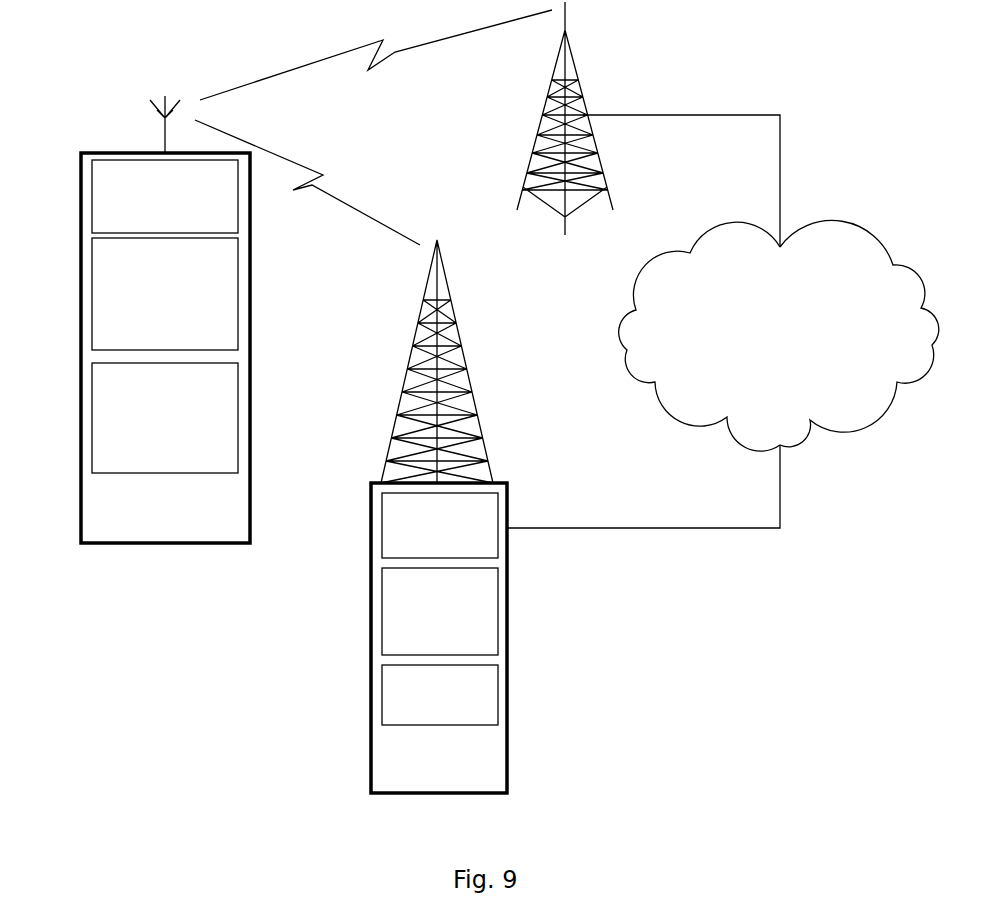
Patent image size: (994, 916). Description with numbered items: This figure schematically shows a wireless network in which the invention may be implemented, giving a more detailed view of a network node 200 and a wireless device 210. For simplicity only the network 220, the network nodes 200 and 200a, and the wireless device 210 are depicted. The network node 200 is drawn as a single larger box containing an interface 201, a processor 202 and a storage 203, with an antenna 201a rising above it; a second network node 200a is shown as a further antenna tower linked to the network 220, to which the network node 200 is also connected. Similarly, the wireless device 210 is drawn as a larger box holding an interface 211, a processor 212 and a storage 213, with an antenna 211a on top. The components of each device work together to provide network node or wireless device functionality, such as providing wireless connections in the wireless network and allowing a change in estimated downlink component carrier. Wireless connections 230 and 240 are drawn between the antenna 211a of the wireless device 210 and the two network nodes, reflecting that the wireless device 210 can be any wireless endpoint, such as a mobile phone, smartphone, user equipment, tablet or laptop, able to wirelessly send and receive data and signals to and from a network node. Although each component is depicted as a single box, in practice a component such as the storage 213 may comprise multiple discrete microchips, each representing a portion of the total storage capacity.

The network node 200 is at (507, 640).
The network node 200a is at (576, 127).
The interface 201 is at (382, 527).
The antenna 201a is at (440, 377).
The processor 202 is at (382, 610).
The storage 203 is at (382, 707).
The wireless device 210 is at (163, 545).
The interface 211 is at (90, 190).
The antenna 211a is at (158, 118).
The processor 212 is at (90, 292).
The storage 213 is at (90, 413).
The network 220 is at (810, 430).
The wireless link 230 is at (310, 190).
The wireless link 240 is at (387, 62).